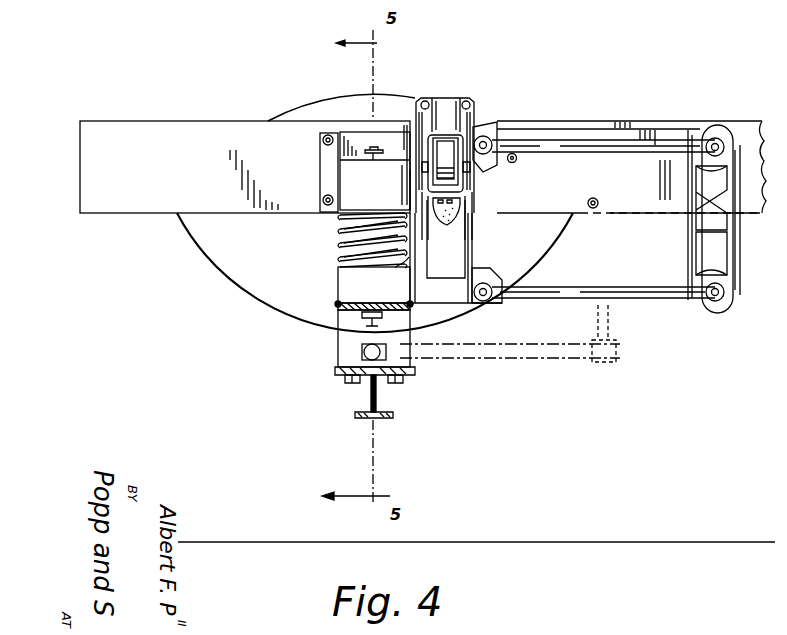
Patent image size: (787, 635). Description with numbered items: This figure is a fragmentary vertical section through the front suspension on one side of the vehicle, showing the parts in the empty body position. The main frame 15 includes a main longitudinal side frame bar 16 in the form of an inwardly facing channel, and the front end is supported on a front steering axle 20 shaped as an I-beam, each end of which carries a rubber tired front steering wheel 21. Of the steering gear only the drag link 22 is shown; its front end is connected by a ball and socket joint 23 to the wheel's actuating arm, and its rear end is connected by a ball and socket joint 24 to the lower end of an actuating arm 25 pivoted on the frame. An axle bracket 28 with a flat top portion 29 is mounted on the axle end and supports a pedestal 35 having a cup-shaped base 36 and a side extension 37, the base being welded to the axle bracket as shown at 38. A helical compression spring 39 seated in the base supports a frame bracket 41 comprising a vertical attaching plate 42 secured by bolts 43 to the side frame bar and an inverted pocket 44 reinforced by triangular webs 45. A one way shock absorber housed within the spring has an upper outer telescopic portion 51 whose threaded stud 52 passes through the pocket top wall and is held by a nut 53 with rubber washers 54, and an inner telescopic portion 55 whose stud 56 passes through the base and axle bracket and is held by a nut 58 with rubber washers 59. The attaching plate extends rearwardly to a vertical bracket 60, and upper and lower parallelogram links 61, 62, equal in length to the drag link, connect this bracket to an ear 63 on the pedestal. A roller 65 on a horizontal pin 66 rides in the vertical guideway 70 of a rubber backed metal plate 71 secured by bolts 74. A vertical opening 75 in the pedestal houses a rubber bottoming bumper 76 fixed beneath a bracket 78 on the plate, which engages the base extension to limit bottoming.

The main frame 15 is at (132, 110).
The main longitudinal side frame bar 16 is at (141, 154).
The front steering axle 20 is at (386, 416).
The front steering wheel 21 is at (584, 420).
The drag link 22 is at (500, 361).
The ball and socket joint 23 is at (326, 380).
The ball and socket joint 24 is at (618, 353).
The actuating arm 25 is at (610, 316).
The axle bracket 28 is at (334, 360).
The flat top portion 29 is at (404, 318).
The pedestal 35 is at (462, 246).
The cup-shaped base 36 is at (346, 289).
The side extension 37 is at (466, 304).
The weld 38 is at (338, 304).
The helical compression spring 39 is at (344, 250).
The frame bracket 41 is at (588, 120).
The vertical attaching plate 42 is at (654, 208).
The bolts 43 is at (322, 138).
The inverted pocket 44 is at (332, 167).
The triangular webs 45 is at (340, 132).
The upper outer telescopic portion 51 is at (346, 231).
The threaded stud 52 is at (372, 144).
The nut 53 is at (362, 146).
The rubber washers 54 is at (375, 171).
The inner telescopic portion 55 is at (338, 268).
The stud 56 is at (395, 338).
The nut 58 is at (340, 343).
The rubber washers 59 is at (362, 315).
The vertical bracket 60 is at (738, 228).
The upper parallelogram link 61 is at (632, 144).
The lower parallelogram link 62 is at (658, 288).
The ear 63 is at (490, 124).
The roller 65 is at (444, 152).
The horizontal pin 66 is at (480, 161).
The vertical guideway 70 is at (448, 98).
The metal plate 71 is at (421, 104).
The bolts 74 is at (474, 96).
The vertical opening 75 is at (472, 264).
The rubber bottoming bumper 76 is at (478, 252).
The bracket 78 is at (450, 206).